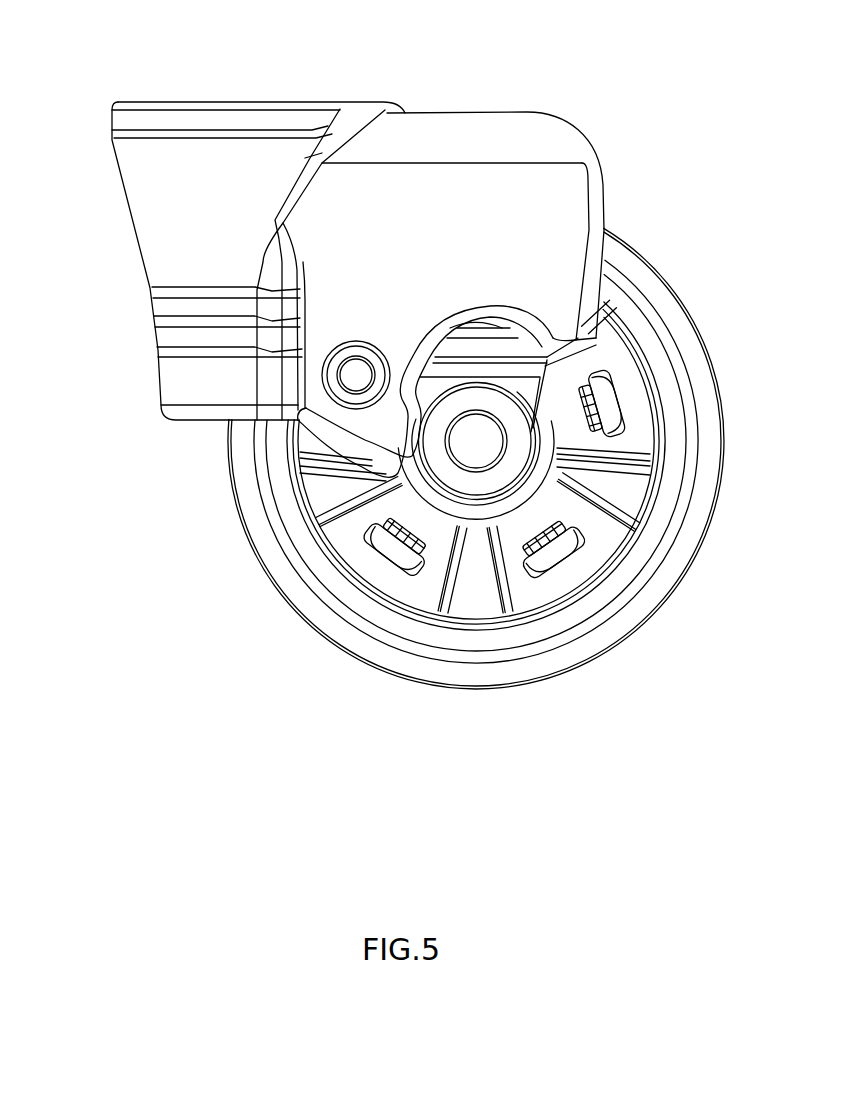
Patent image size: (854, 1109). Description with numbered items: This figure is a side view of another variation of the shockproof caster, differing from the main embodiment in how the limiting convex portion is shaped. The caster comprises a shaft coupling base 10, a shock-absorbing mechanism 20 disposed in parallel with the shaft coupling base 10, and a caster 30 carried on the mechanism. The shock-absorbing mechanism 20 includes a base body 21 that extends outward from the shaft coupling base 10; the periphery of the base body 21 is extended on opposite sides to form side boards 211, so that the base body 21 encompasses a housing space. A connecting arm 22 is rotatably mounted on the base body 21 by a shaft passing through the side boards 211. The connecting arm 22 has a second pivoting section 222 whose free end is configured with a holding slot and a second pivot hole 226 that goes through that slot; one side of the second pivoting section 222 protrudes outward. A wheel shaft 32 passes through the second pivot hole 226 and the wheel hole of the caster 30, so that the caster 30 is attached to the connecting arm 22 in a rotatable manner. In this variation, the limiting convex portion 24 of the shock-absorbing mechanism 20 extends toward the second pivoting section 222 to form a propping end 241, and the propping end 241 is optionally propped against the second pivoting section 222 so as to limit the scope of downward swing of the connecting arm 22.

The shaft coupling base 10 is at (105, 103).
The shock-absorbing mechanism 20 is at (527, 78).
The base body 21 is at (556, 118).
The side board 211 is at (463, 235).
The connecting arm 22 is at (540, 440).
The second pivoting section 222 is at (447, 480).
The second pivot hole 226 is at (481, 470).
The limiting convex portion 24 is at (358, 437).
The propping end 241 is at (408, 442).
The caster 30 is at (598, 643).
The wheel shaft 32 is at (485, 440).